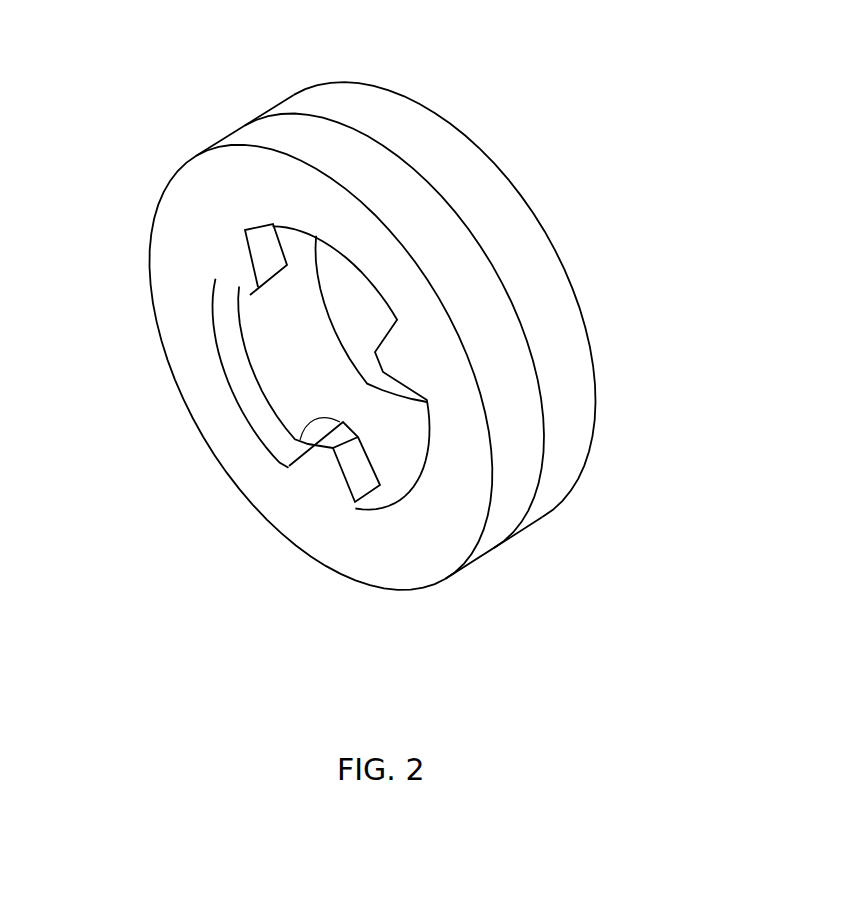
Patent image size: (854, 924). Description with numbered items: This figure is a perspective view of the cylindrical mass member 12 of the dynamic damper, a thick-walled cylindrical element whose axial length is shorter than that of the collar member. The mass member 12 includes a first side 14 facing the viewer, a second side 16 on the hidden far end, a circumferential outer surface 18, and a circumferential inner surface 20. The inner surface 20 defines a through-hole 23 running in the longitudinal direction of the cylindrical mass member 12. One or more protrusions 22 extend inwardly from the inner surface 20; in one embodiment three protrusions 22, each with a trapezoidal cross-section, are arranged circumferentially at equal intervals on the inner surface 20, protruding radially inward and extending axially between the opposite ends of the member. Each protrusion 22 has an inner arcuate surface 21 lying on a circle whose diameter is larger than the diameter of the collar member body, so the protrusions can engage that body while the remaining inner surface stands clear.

The cylindrical mass member 12 is at (373, 343).
The first side 14 is at (411, 560).
The second side 16 is at (588, 317).
The circumferential outer surface 18 is at (578, 372).
The circumferential inner surface 20 is at (284, 366).
The inner arcuate surface 21 is at (269, 293).
The protrusion 22 is at (246, 287).
The through-hole 23 is at (294, 331).